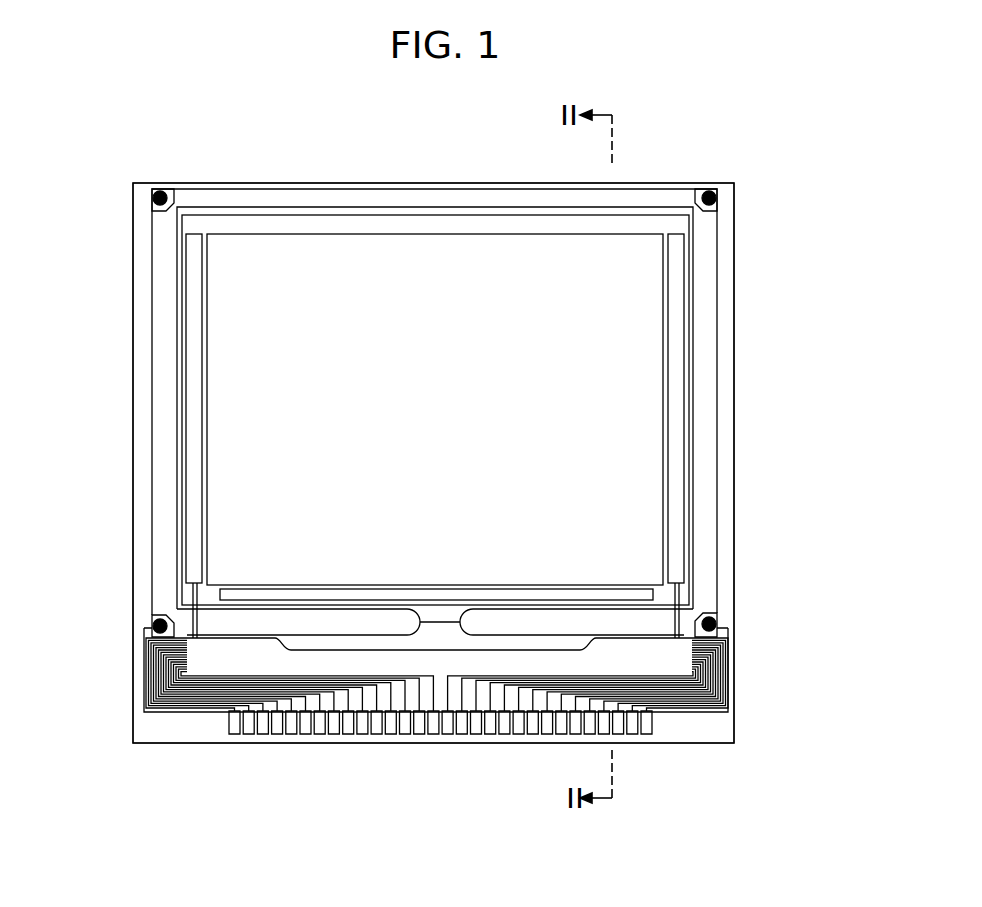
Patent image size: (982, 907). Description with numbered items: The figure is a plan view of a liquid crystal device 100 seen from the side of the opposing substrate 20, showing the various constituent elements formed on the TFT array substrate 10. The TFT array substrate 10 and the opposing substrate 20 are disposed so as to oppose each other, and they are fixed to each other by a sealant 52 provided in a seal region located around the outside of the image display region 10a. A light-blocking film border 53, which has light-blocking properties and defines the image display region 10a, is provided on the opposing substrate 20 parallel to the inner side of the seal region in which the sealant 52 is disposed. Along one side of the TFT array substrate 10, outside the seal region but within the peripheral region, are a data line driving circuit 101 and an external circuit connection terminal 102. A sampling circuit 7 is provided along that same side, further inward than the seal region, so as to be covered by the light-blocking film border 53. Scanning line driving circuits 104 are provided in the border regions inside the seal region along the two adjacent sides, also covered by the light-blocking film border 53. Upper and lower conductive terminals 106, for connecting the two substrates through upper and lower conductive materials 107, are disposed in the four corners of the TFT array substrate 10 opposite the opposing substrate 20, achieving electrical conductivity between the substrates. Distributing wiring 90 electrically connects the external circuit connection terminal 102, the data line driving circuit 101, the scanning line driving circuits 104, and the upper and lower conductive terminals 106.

The liquid crystal device 100 is at (694, 80).
The TFT array substrate 10 is at (262, 184).
The image display region 10a is at (250, 362).
The opposing substrate 20 is at (458, 207).
The sealant 52 is at (707, 335).
The light-blocking film border 53 is at (695, 590).
The scanning line driving circuits 104 is at (195, 447).
The upper and lower conductive terminals 106 is at (180, 194).
The upper and lower conductive materials 107 is at (155, 628).
The sampling circuit 7 is at (450, 589).
The distributing wiring 90 is at (147, 678).
The data line driving circuit 101 is at (205, 666).
The external circuit connection terminal 102 is at (405, 735).